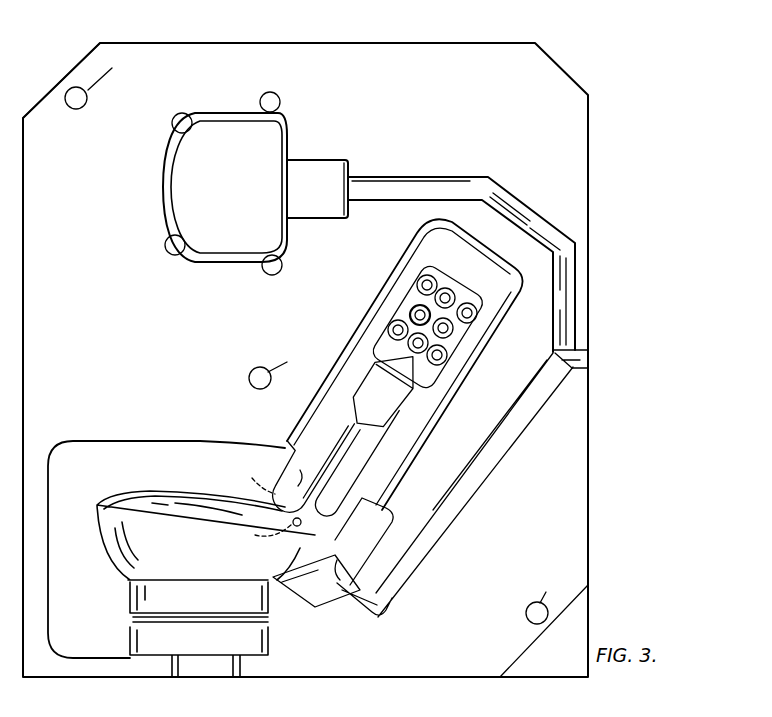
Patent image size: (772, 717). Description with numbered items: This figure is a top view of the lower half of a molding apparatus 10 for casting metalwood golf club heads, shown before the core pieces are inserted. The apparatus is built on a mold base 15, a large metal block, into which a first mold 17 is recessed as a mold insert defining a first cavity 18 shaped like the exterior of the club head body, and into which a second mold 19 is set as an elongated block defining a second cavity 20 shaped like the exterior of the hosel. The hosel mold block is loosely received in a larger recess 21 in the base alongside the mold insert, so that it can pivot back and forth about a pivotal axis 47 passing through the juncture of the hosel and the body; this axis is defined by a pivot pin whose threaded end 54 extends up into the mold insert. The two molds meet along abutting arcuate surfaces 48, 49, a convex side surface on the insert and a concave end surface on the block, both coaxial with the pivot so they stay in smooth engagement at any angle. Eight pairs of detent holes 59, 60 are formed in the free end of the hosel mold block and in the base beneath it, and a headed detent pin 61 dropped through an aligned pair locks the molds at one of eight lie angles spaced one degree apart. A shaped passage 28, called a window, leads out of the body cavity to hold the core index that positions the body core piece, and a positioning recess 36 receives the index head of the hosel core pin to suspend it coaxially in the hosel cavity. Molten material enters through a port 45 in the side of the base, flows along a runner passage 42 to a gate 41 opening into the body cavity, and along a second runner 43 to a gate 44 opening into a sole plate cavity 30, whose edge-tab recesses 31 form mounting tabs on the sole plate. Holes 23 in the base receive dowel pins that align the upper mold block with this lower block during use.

The molding apparatus 10 is at (674, 388).
The mold base 15 is at (577, 153).
The first mold 17 is at (103, 452).
The first cavity 18 is at (168, 508).
The second mold 19 is at (403, 467).
The second cavity 20 is at (347, 430).
The recess 21 is at (490, 333).
The holes 23 is at (312, 338).
The passage 28 is at (135, 640).
The cavity 30 is at (289, 127).
The edge-tab recesses 31 is at (250, 296).
The positioning recess 36 is at (393, 405).
The gate 41 is at (345, 556).
The passage 42 is at (432, 553).
The second runner 43 is at (423, 188).
The gate 44 is at (325, 157).
The port 45 is at (577, 357).
The pivotal axis 47 is at (268, 533).
The arcuate surface 48 is at (335, 560).
The arcuate surface 49 is at (292, 478).
The threaded end 54 is at (262, 486).
The detent holes 59 is at (465, 315).
The detent holes 60 is at (447, 302).
The detent pin 61 is at (412, 312).